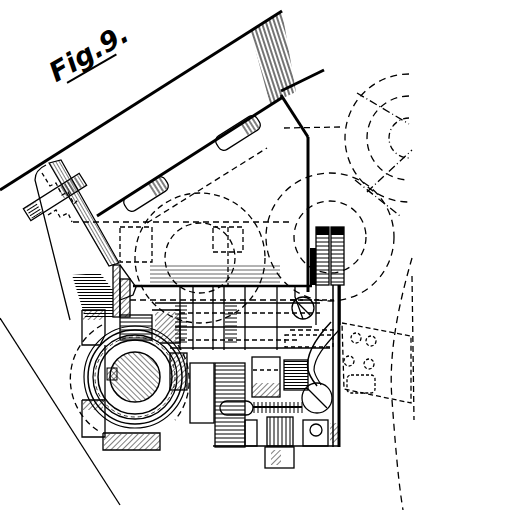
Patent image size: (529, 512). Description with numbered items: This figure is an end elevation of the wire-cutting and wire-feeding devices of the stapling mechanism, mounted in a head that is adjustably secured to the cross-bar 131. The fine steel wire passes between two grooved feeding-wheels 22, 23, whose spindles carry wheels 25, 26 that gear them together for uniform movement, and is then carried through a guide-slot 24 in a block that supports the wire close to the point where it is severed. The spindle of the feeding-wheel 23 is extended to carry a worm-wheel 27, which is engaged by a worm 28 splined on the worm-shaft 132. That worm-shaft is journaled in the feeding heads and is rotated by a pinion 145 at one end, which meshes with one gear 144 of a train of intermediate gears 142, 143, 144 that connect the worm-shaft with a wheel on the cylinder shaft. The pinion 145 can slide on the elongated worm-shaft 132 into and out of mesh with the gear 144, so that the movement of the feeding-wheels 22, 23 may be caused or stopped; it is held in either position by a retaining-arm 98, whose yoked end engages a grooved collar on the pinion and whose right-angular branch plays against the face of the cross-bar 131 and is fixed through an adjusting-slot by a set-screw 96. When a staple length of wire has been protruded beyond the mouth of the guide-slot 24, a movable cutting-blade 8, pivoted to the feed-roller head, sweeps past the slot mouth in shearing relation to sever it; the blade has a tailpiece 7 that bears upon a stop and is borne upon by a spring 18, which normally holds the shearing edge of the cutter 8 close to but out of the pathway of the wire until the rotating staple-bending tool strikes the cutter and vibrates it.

The cross-bar 131 is at (162, 113).
The set-screw 96 is at (46, 199).
The retaining-arm 98 is at (73, 273).
The worm-wheel 27 is at (117, 295).
The intermediate gear 144 is at (205, 192).
The gear wheel 26 is at (232, 232).
The intermediate gear 142 is at (378, 137).
The intermediate gear 143 is at (292, 183).
The feeding-wheel 23 is at (324, 230).
The guide-slot 24 is at (308, 330).
The cutting-blade 8 is at (318, 362).
The tailpiece 7 is at (264, 373).
The gear wheel 25 is at (219, 444).
The spring 18 is at (265, 455).
The feeding-wheel 22 is at (326, 446).
The worm 28 is at (162, 404).
The worm-shaft 132 is at (140, 400).
The pinion 145 is at (73, 366).